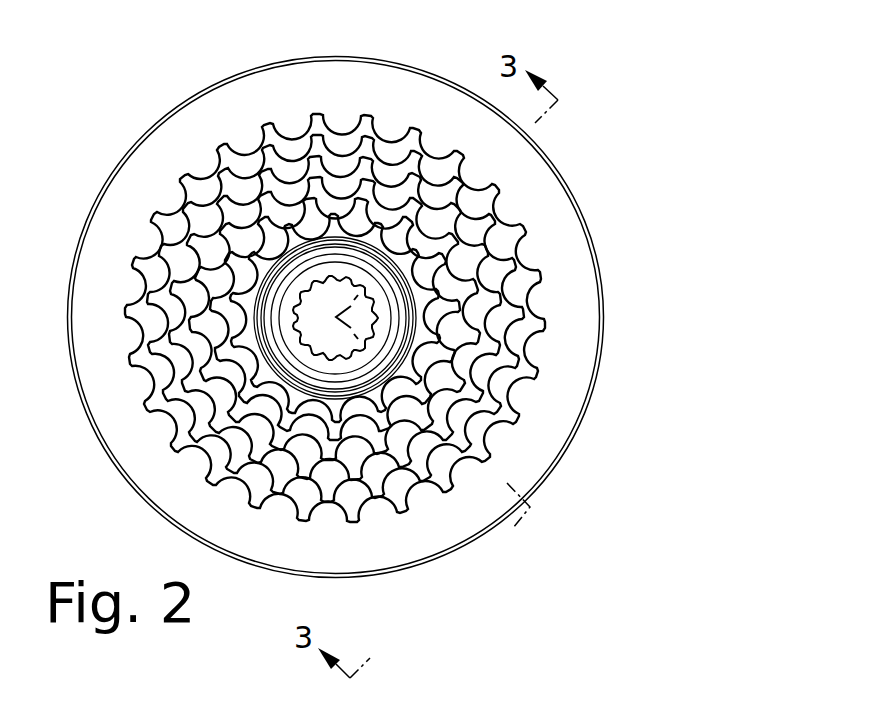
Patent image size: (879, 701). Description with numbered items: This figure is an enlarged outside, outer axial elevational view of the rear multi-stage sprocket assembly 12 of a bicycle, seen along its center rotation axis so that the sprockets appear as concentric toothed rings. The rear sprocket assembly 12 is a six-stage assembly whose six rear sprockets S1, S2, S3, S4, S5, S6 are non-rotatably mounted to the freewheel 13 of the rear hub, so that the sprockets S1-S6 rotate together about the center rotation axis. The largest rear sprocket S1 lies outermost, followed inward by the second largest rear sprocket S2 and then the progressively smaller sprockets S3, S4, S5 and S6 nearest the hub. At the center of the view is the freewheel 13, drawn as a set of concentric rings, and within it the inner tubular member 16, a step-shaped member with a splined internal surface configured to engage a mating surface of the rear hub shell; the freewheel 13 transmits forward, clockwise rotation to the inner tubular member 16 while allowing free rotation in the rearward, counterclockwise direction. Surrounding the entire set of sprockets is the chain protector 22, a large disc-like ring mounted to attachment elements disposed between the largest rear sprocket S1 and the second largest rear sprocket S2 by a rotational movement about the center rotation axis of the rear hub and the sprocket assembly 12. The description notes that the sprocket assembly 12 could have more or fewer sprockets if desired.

The rear multi-stage sprocket assembly 12 is at (636, 115).
The chain protector 22 is at (587, 181).
The freewheel 13 is at (276, 278).
The inner tubular member 16 is at (328, 273).
The largest rear sprocket S1 is at (529, 210).
The second largest rear sprocket S2 is at (522, 248).
The rear sprocket S3 is at (487, 285).
The rear sprocket S4 is at (442, 328).
The rear sprocket S5 is at (473, 327).
The rear sprocket S6 is at (488, 375).